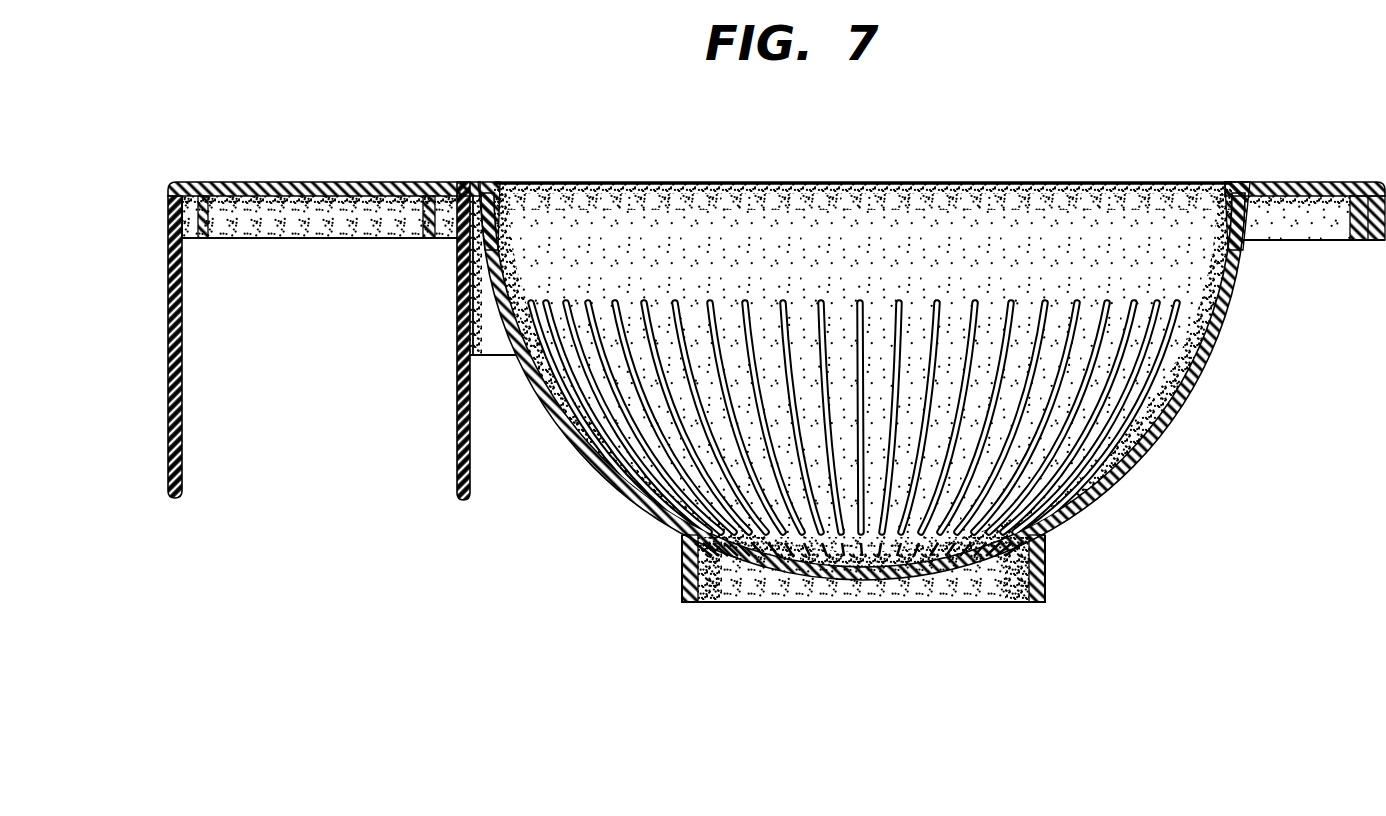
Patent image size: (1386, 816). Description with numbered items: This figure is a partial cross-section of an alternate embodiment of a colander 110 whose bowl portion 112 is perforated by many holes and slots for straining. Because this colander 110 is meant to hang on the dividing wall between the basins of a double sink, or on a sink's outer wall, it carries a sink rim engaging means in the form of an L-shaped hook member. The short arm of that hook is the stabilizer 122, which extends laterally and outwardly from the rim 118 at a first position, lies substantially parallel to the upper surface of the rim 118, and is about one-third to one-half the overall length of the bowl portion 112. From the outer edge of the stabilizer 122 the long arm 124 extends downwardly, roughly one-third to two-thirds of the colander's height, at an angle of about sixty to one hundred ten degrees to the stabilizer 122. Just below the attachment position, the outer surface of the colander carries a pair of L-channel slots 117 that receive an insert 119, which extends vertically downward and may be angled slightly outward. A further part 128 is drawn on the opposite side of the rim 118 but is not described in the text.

The colander 110 is at (1042, 672).
The bowl portion 112 is at (1158, 443).
The L-channel slots 117 is at (496, 357).
The rim 118 is at (1008, 182).
The insert 119 is at (455, 472).
The stabilizer 122 is at (320, 182).
The long arm 124 is at (167, 279).
The right flange 128 is at (1316, 235).